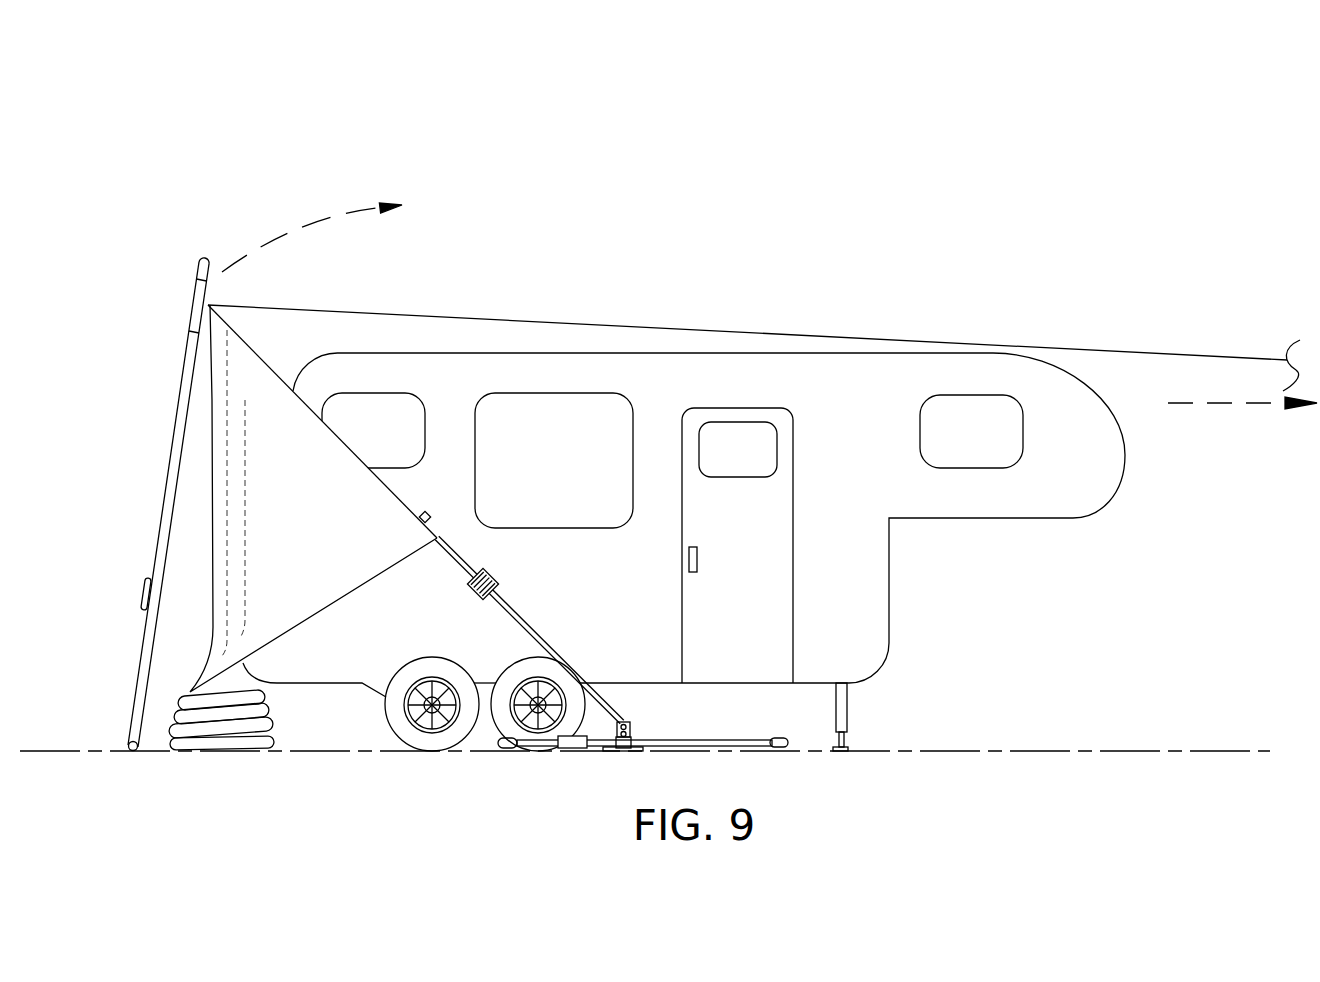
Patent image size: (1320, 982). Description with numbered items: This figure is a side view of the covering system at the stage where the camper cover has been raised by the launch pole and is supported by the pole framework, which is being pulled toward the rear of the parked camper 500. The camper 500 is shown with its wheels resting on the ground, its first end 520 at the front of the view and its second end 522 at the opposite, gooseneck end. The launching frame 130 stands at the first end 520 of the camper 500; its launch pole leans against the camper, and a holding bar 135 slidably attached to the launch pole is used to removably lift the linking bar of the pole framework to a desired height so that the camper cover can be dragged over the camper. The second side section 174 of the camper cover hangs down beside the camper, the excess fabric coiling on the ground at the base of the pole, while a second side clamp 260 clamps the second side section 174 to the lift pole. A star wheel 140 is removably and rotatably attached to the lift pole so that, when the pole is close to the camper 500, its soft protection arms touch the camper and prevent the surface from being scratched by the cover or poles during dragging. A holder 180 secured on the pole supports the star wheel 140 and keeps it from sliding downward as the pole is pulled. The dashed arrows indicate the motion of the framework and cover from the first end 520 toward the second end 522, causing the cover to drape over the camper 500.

The launching frame 130 is at (178, 390).
The holding bar 135 is at (210, 303).
The second side section 174 is at (248, 395).
The first end of the camper 520 is at (338, 355).
The second side clamp 260 is at (430, 512).
The star wheel 140 is at (493, 569).
The holder 180 is at (481, 598).
The camper 500 is at (885, 567).
The second end of the camper 522 is at (1122, 487).